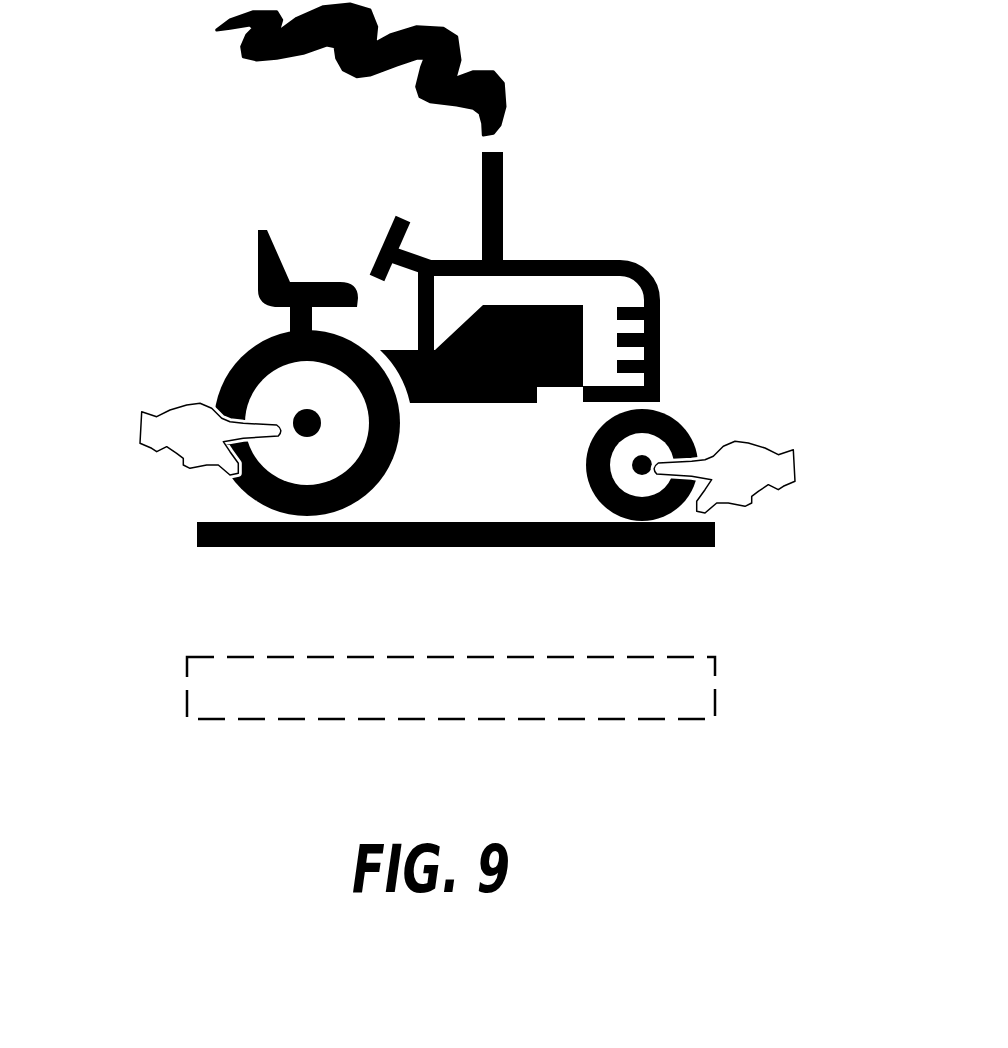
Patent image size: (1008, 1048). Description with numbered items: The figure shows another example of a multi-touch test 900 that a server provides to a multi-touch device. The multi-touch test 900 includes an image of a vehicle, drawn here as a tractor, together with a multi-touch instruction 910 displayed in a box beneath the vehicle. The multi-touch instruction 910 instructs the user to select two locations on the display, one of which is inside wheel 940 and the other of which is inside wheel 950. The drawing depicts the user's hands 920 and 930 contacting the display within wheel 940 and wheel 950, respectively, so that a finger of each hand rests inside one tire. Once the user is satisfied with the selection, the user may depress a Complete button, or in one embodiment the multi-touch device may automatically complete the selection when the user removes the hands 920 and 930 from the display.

The multi-touch test 900 is at (467, 391).
The multi-touch instruction 910 is at (417, 717).
The user's hand 920 is at (159, 432).
The user's hand 930 is at (775, 472).
The wheel 940 is at (274, 415).
The wheel 950 is at (678, 454).